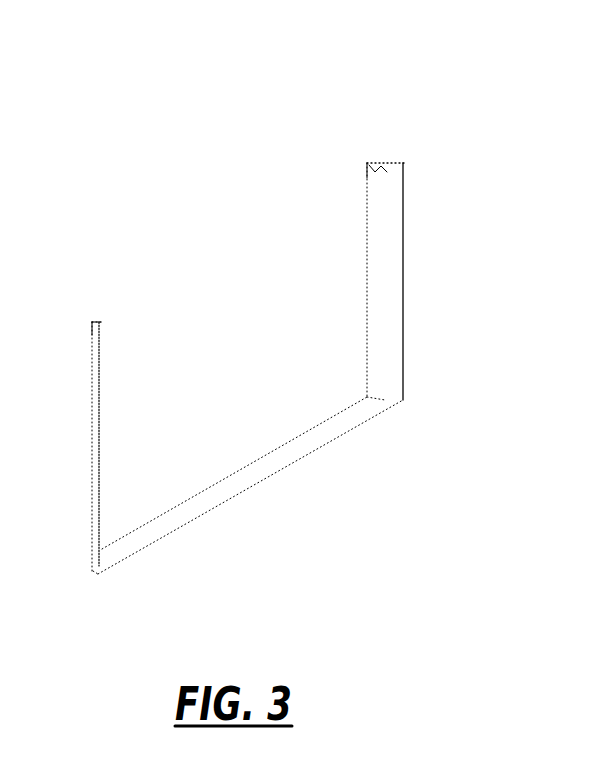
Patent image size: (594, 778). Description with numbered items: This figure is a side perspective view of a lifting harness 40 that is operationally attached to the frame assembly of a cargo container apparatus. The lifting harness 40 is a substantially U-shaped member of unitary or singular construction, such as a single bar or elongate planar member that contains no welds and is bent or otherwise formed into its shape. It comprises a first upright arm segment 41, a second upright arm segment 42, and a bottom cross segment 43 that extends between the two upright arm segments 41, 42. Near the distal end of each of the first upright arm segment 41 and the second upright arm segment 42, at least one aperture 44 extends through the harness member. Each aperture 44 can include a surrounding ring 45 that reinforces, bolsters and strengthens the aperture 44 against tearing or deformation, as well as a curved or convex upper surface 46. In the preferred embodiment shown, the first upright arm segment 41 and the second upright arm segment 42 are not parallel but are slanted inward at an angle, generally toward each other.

The lifting harness 40 is at (289, 310).
The first upright arm segment 41 is at (102, 457).
The second upright arm segment 42 is at (382, 280).
The bottom cross segment 43 is at (260, 472).
The aperture 44 is at (92, 330).
The surrounding ring 45 is at (372, 167).
The curved or convex upper surface 46 is at (97, 331).